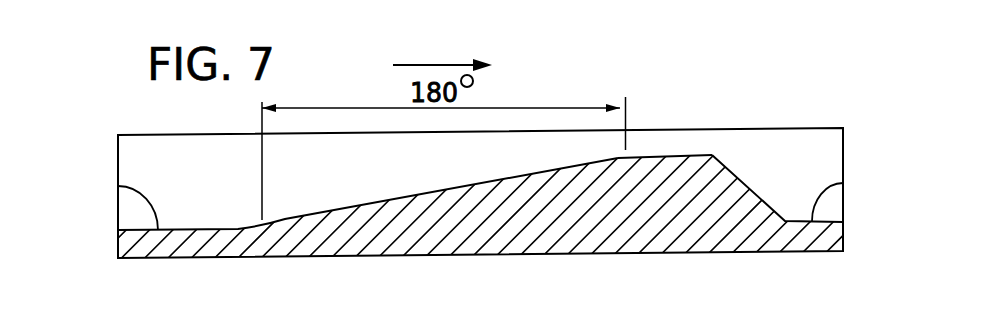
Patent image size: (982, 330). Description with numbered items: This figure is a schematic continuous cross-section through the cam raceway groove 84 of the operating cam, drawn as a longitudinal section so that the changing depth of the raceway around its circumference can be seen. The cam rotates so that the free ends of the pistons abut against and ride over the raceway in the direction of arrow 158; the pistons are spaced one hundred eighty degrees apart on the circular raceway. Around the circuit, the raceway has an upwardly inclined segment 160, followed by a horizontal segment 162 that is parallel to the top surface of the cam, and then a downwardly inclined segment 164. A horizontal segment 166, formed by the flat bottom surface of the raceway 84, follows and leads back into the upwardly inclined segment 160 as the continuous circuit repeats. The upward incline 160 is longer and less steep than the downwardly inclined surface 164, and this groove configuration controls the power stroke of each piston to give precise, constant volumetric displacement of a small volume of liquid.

The cam raceway groove 84 is at (183, 190).
The arrow 158 is at (442, 64).
The upwardly inclined segment 160 is at (423, 195).
The horizontal segment 162 is at (677, 157).
The downwardly inclined segment 164 is at (757, 193).
The horizontal segment 166 is at (118, 186).